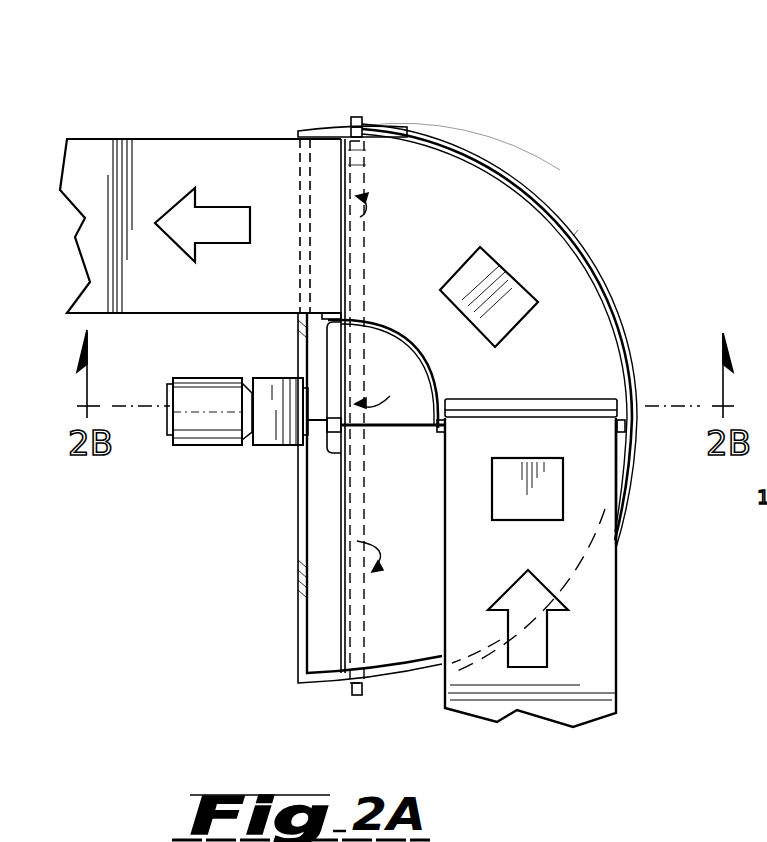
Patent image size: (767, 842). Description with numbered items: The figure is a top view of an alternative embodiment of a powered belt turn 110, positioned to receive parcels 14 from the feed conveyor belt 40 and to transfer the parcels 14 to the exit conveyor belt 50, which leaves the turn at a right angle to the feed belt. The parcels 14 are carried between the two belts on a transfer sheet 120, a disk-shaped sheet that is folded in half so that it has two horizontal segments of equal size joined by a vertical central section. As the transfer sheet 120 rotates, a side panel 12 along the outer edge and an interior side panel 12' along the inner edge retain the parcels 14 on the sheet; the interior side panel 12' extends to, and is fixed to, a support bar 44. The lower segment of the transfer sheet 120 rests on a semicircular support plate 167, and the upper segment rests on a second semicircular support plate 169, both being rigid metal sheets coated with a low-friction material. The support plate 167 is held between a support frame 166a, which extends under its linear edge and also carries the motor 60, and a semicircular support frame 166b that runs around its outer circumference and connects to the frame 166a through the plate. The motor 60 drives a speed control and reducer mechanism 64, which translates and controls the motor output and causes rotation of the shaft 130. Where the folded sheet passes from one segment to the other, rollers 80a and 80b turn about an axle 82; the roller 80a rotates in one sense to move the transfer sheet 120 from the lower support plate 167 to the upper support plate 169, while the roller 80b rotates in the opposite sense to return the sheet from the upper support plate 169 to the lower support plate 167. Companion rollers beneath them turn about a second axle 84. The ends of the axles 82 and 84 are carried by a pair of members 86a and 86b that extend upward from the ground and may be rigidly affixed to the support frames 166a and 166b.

The exit conveyor belt 50 is at (205, 160).
The member 86a is at (356, 117).
The member 86b is at (357, 697).
The axle 82 is at (369, 147).
The transfer sheet 120 is at (458, 172).
The powered belt turn 110 is at (533, 162).
The side panel 12 is at (627, 214).
The support plate 169 is at (620, 318).
The roller 80b is at (362, 373).
The roller 80a is at (357, 506).
The parcel 14 is at (505, 284).
The interior side panel 12' is at (422, 374).
The shaft 130 is at (313, 398).
The motor 60 is at (182, 436).
The speed control and reducer mechanism 64 is at (280, 440).
The support bar 44 is at (398, 432).
The support plate 167 is at (323, 565).
The axle 84 is at (353, 602).
The support frame 166a is at (285, 645).
The support frame 166b is at (652, 452).
The feed conveyor belt 40 is at (610, 578).